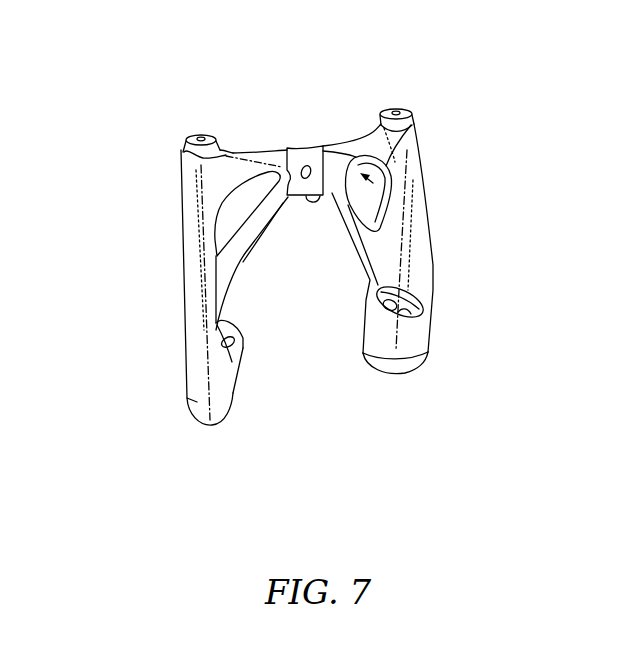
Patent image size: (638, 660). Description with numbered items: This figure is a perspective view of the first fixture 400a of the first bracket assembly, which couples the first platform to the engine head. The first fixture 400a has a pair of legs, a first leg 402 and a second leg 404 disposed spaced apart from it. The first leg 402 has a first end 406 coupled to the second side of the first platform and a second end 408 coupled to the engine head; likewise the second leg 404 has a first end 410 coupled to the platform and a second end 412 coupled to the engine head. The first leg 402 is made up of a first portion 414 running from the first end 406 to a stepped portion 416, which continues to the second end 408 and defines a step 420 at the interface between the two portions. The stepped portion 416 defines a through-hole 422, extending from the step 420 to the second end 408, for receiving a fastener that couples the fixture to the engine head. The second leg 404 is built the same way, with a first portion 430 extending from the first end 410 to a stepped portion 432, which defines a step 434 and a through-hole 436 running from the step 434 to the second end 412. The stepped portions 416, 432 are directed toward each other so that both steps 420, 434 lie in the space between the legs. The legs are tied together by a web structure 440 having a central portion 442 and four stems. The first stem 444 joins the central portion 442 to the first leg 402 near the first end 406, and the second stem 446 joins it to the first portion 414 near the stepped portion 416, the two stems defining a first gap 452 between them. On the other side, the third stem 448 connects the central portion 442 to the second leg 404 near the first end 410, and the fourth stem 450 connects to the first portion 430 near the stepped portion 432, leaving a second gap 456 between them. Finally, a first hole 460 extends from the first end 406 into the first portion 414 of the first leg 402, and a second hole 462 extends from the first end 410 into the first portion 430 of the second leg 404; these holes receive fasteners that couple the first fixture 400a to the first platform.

The first fixture 400a is at (148, 54).
The first leg 402 is at (186, 299).
The second leg 404 is at (430, 221).
The first end 406 is at (181, 148).
The second end 408 is at (192, 415).
The first end 410 is at (417, 127).
The second end 412 is at (401, 372).
The first portion 414 is at (132, 172).
The stepped portion 416 is at (250, 323).
The step 420 is at (233, 334).
The through-hole 422 is at (210, 328).
The first portion 430 is at (470, 123).
The stepped portion 432 is at (353, 273).
The step 434 is at (418, 308).
The through-hole 436 is at (392, 330).
The web structure 440 is at (262, 241).
The central portion 442 is at (322, 188).
The first stem 444 is at (250, 156).
The second stem 446 is at (248, 259).
The third stem 448 is at (364, 140).
The fourth stem 450 is at (345, 204).
The first gap 452 is at (230, 208).
The second gap 456 is at (416, 125).
The first hole 460 is at (200, 133).
The second hole 462 is at (397, 112).